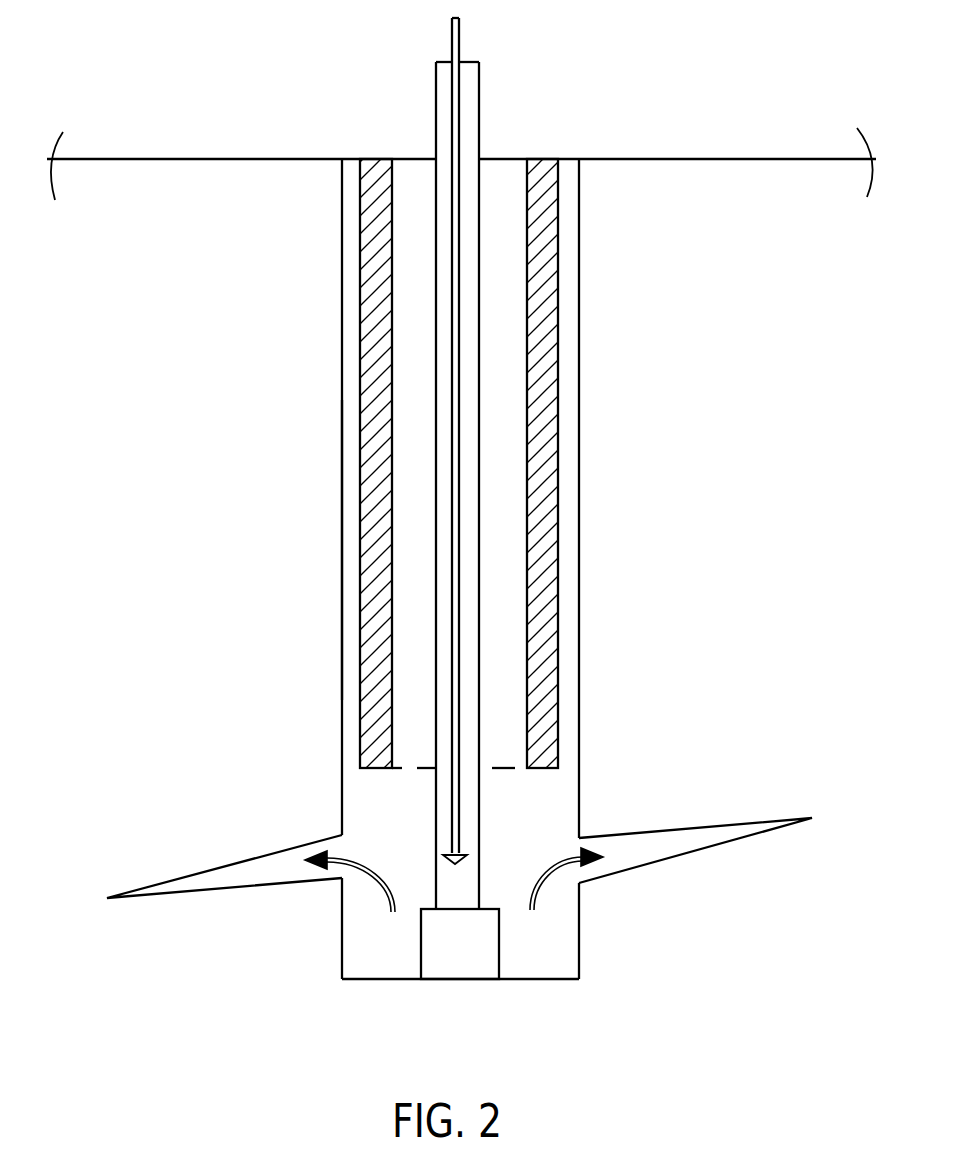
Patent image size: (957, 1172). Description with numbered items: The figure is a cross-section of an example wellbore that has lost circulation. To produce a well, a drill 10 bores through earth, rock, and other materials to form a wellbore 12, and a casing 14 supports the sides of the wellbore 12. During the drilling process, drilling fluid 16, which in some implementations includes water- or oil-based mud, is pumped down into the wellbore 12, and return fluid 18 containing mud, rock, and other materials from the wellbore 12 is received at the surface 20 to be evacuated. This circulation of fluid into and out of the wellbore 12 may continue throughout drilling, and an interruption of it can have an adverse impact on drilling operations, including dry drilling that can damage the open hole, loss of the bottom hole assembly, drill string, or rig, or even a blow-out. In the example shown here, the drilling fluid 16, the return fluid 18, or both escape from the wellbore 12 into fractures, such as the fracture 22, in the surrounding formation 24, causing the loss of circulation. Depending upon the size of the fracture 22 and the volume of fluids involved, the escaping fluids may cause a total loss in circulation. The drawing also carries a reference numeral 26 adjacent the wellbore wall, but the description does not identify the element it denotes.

The drill 10 is at (492, 968).
The wellbore 12 is at (567, 950).
The casing 14 is at (367, 653).
The drilling fluid 16 is at (460, 839).
The return fluid 18 is at (378, 878).
The surface 20 is at (158, 160).
The fracture 22 is at (172, 887).
The surrounding formation 24 is at (225, 762).
The outer wall 26 is at (352, 542).